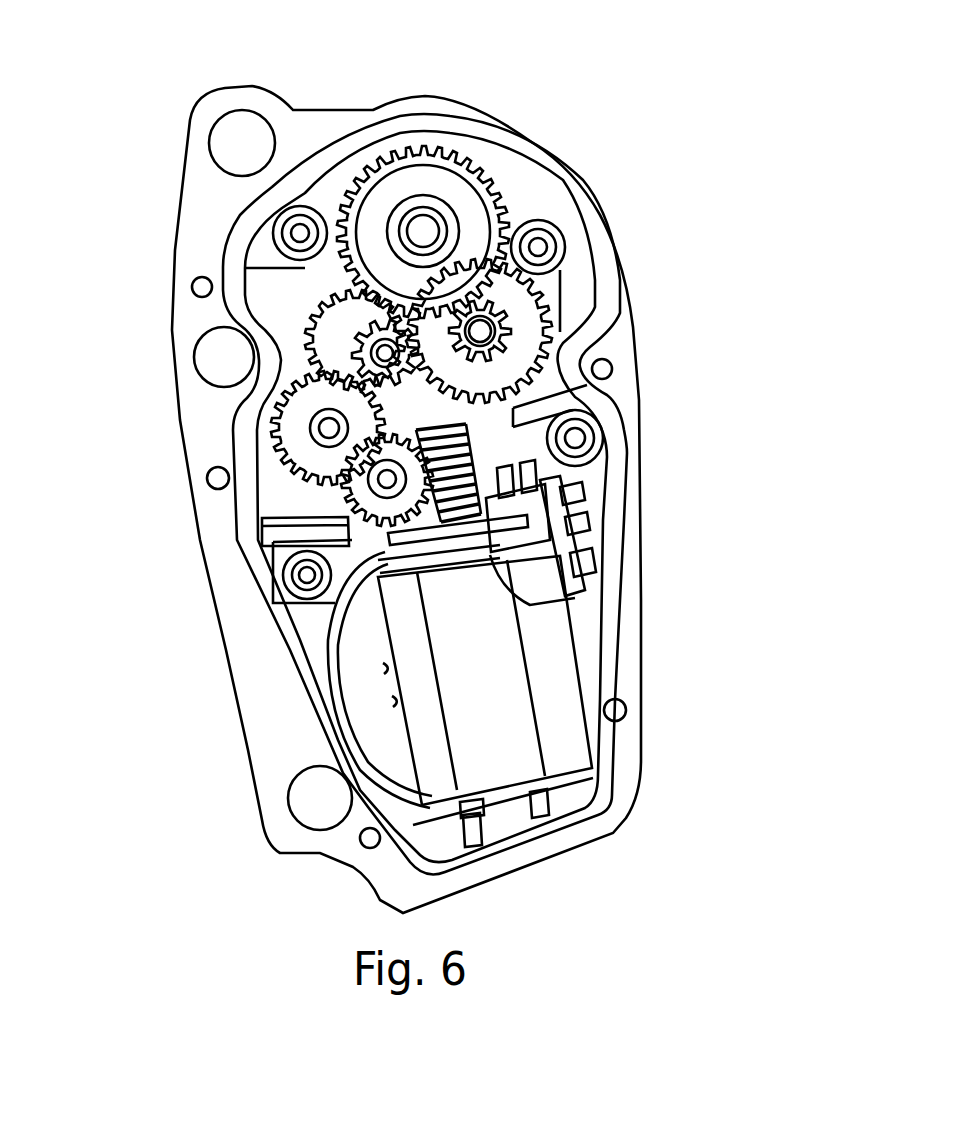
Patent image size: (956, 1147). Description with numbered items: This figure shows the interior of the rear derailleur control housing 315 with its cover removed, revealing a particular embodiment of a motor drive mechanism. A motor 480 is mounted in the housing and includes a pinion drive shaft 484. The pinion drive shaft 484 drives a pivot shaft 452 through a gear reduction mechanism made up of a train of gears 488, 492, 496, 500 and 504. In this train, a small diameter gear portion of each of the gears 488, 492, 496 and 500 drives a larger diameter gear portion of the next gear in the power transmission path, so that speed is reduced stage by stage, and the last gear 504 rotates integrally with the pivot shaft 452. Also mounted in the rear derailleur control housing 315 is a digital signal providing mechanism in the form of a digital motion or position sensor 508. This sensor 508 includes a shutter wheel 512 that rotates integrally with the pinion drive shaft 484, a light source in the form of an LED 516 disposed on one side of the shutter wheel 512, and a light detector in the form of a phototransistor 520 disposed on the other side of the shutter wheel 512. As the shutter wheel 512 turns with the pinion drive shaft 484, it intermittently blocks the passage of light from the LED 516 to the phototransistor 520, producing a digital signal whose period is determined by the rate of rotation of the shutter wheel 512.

The rear derailleur control housing 315 is at (178, 420).
The pivot shaft 452 is at (422, 232).
The motor 480 is at (510, 683).
The pinion drive shaft 484 is at (430, 447).
The gear 488 is at (350, 492).
The gear 492 is at (302, 440).
The gear 496 is at (335, 327).
The gear 500 is at (545, 307).
The gear 504 is at (410, 185).
The digital motion or position sensor 508 is at (632, 506).
The shutter wheel 512 is at (523, 517).
The LED 516 is at (527, 500).
The phototransistor 520 is at (638, 590).